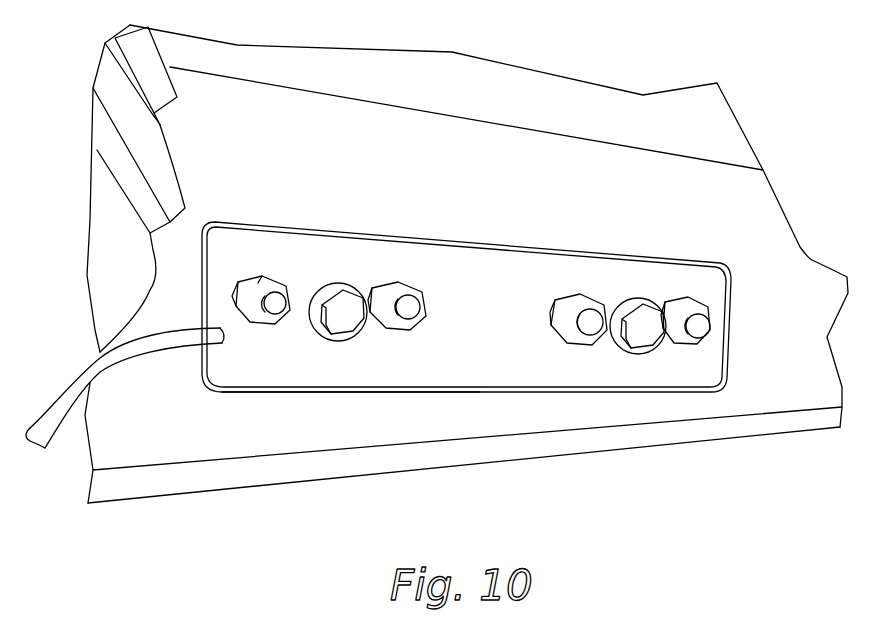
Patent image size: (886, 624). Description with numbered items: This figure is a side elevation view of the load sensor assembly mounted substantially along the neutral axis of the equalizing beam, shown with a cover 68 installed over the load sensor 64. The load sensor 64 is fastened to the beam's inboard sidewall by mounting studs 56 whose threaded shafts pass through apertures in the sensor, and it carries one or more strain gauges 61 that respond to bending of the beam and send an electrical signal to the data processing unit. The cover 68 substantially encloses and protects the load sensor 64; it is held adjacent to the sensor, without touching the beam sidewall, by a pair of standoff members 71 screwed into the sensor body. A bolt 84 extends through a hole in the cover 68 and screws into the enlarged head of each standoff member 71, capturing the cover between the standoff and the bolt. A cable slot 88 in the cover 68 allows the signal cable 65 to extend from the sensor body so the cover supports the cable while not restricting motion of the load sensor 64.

The mounting stud 56 is at (273, 312).
The strain gauge 61 is at (490, 320).
The load sensor 64 is at (488, 287).
The signal cable 65 is at (60, 402).
The cover 68 is at (240, 387).
The standoff member 71 is at (320, 346).
The bolt 84 is at (352, 317).
The cable slot 88 is at (108, 501).